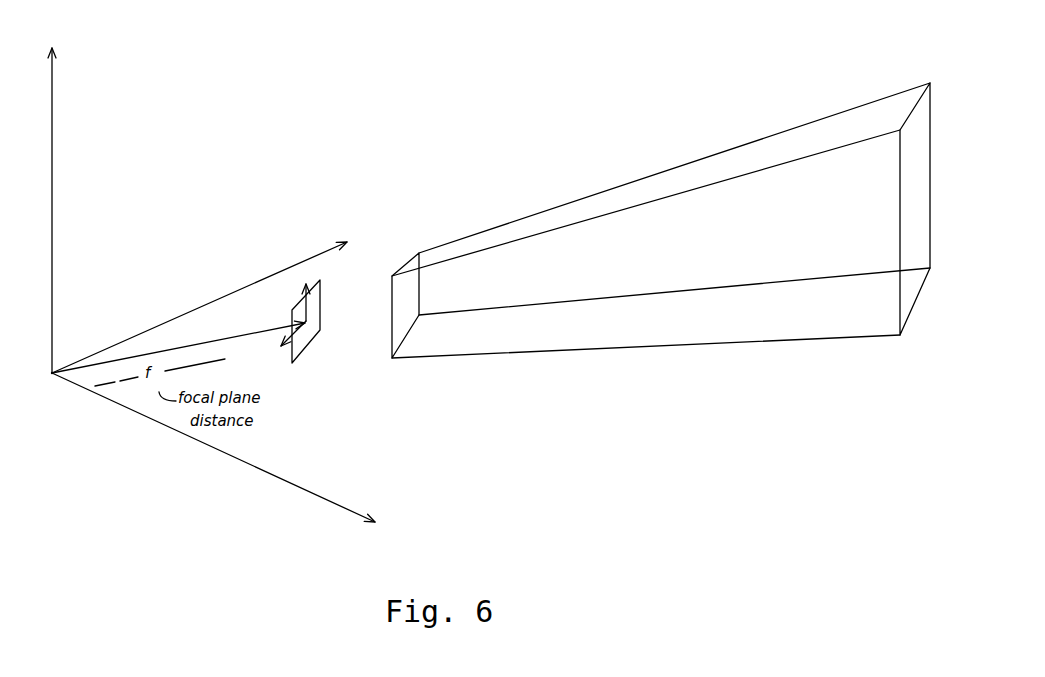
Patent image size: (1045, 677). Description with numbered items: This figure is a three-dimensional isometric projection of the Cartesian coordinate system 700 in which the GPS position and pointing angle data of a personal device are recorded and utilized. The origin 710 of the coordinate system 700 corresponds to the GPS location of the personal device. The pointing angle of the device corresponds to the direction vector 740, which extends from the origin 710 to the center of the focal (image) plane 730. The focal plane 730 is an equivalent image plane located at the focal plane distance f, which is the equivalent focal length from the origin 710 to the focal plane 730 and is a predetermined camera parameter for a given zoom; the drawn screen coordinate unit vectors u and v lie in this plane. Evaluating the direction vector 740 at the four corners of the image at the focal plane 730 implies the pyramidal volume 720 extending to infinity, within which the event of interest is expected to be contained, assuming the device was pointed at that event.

The Cartesian coordinate system 700 is at (55, 168).
The origin 710 is at (56, 386).
The pyramidal volume 720 is at (640, 188).
The focal plane 730 is at (303, 362).
The direction vector 740 is at (185, 348).